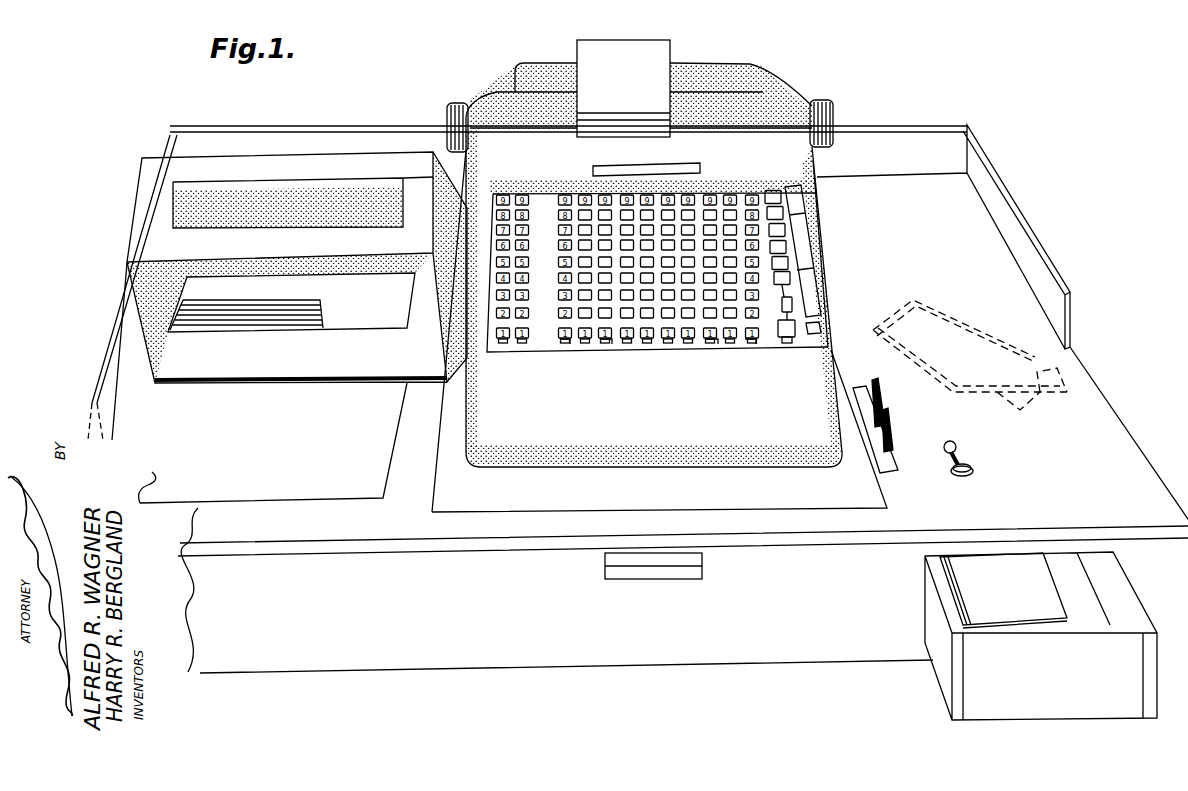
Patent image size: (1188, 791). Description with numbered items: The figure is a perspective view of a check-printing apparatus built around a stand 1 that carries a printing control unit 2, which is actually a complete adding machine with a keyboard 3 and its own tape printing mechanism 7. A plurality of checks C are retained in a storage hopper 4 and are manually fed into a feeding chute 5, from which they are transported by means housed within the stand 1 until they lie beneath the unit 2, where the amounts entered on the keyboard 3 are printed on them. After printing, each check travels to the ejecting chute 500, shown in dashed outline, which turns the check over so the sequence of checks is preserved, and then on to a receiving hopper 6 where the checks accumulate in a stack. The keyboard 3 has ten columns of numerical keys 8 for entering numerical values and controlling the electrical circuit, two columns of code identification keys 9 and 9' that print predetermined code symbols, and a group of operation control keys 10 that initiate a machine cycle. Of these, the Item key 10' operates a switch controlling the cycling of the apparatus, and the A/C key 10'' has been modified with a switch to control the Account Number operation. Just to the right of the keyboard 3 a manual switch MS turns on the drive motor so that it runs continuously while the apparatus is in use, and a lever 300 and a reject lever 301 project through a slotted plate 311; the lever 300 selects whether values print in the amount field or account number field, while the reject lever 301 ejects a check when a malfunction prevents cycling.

The stand 1 is at (972, 252).
The printing control unit 2 is at (740, 142).
The keyboard 3 is at (713, 215).
The storage hopper 4 is at (190, 357).
The feeding chute 5 is at (215, 200).
The receiving hopper 6 is at (1108, 597).
The tape printing mechanism 7 is at (590, 120).
The numerical keys 8 is at (750, 373).
The code identification keys 9 is at (517, 295).
The code identification keys 9' is at (493, 295).
The operation control keys 10 is at (813, 283).
The Item key 10' is at (827, 251).
The A/C key 10'' is at (855, 239).
The lever 300 is at (881, 392).
The reject lever 301 is at (890, 432).
The slotted plate 311 is at (862, 388).
The ejecting chute 500 is at (1048, 360).
The check C is at (210, 320).
The manual switch MS is at (976, 465).